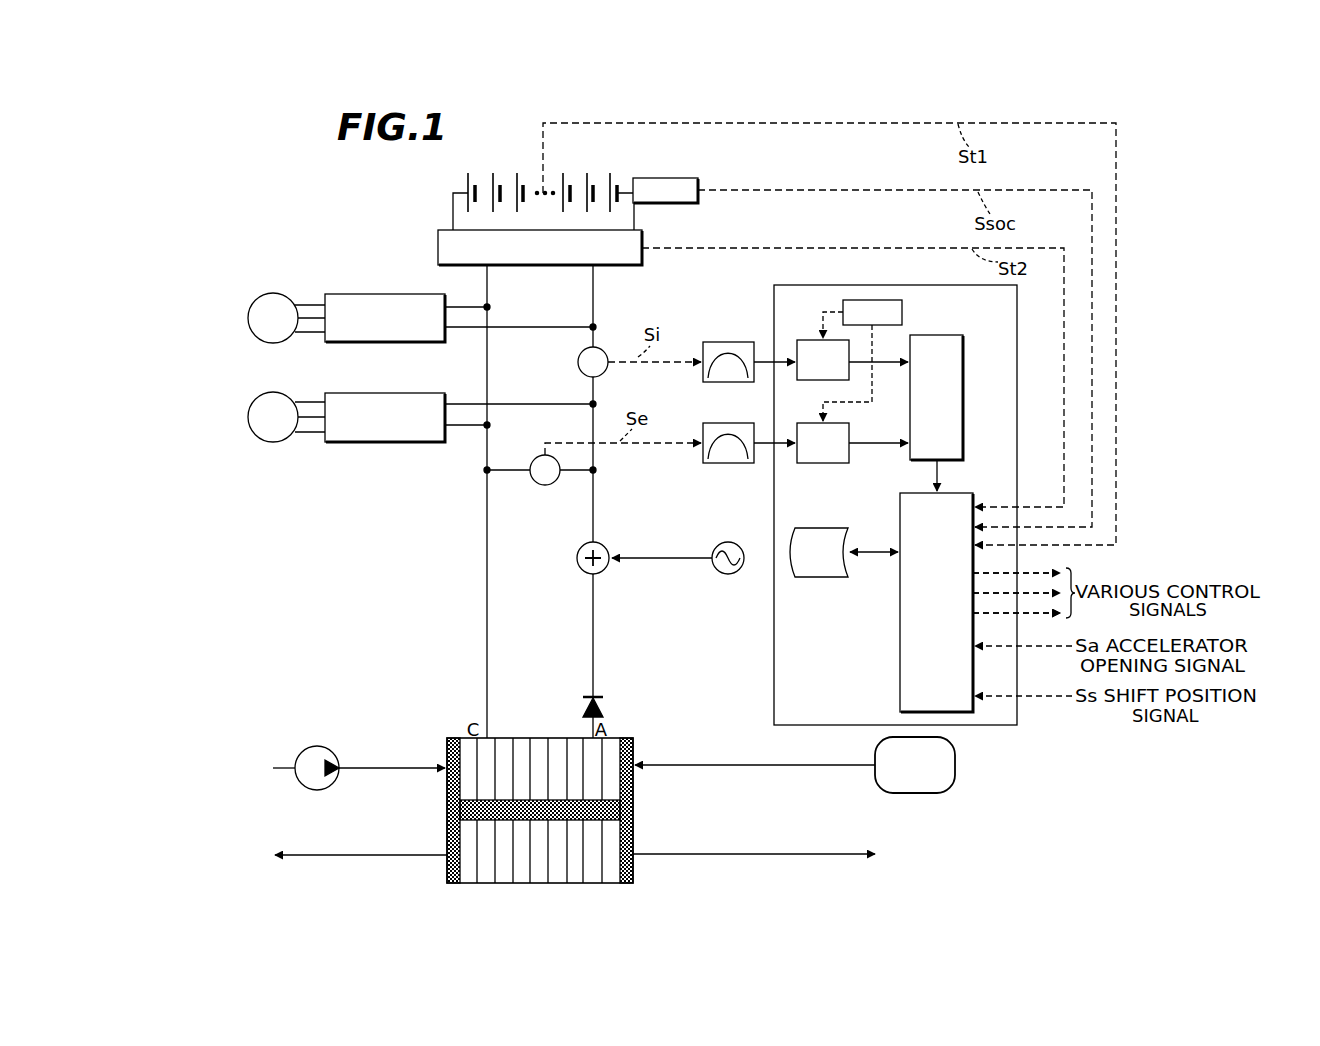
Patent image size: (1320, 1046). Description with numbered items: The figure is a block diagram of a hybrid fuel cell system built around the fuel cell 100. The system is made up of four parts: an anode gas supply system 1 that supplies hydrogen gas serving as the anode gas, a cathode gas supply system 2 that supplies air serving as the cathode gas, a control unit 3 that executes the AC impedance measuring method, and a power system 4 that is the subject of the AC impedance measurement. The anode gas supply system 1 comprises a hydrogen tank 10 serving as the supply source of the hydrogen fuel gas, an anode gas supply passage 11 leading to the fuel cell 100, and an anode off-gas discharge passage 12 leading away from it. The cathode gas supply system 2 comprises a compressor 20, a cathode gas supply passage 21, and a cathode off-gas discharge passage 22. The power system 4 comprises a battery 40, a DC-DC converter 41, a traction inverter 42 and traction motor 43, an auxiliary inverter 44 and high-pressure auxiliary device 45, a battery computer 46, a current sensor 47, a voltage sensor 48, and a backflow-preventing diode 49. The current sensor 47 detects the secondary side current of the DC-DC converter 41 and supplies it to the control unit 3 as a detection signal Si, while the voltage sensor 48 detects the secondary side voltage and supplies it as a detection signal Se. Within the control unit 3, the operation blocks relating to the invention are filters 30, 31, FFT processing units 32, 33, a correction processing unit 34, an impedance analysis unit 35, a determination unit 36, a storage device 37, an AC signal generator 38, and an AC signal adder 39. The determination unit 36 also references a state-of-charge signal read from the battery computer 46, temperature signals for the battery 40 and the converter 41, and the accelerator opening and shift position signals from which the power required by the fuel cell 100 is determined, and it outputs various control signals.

The anode gas supply system 1 is at (670, 821).
The cathode gas supply system 2 is at (428, 821).
The control unit 3 is at (1017, 312).
The power system 4 is at (560, 549).
The hydrogen tank 10 is at (957, 766).
The anode gas supply passage 11 is at (757, 765).
The anode off-gas discharge passage 12 is at (808, 854).
The compressor 20 is at (305, 749).
The cathode gas supply passage 21 is at (388, 766).
The cathode off-gas discharge passage 22 is at (366, 855).
The filter 30 is at (727, 342).
The filter 31 is at (710, 423).
The FFT processing unit 32 is at (815, 340).
The FFT processing unit 33 is at (815, 423).
The correction processing unit 34 is at (902, 313).
The impedance analysis unit 35 is at (963, 356).
The determination unit 36 is at (968, 493).
The storage device 37 is at (822, 528).
The AC signal generator 38 is at (735, 543).
The AC signal adder 39 is at (604, 547).
The battery 40 is at (608, 170).
The DC-DC converter 41 is at (645, 241).
The traction inverter 42 is at (375, 294).
The traction motor 43 is at (280, 294).
The auxiliary inverter 44 is at (405, 393).
The high-pressure auxiliary device 45 is at (280, 393).
The battery computer 46 is at (680, 178).
The current sensor 47 is at (578, 360).
The voltage sensor 48 is at (538, 458).
The backflow-preventing diode 49 is at (584, 697).
The fuel cell 100 is at (635, 749).